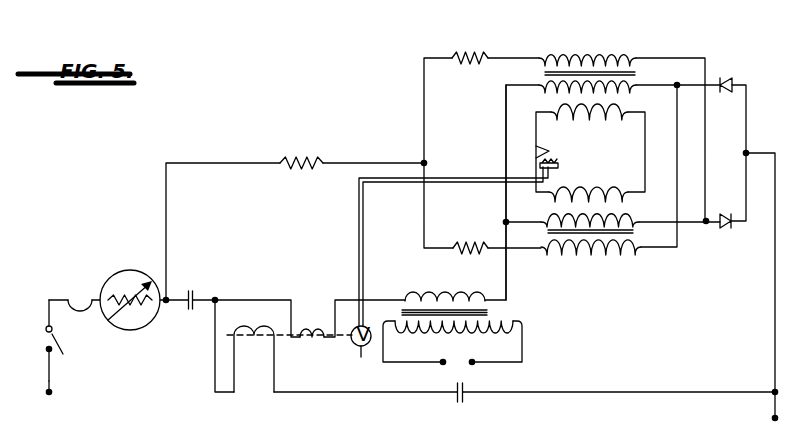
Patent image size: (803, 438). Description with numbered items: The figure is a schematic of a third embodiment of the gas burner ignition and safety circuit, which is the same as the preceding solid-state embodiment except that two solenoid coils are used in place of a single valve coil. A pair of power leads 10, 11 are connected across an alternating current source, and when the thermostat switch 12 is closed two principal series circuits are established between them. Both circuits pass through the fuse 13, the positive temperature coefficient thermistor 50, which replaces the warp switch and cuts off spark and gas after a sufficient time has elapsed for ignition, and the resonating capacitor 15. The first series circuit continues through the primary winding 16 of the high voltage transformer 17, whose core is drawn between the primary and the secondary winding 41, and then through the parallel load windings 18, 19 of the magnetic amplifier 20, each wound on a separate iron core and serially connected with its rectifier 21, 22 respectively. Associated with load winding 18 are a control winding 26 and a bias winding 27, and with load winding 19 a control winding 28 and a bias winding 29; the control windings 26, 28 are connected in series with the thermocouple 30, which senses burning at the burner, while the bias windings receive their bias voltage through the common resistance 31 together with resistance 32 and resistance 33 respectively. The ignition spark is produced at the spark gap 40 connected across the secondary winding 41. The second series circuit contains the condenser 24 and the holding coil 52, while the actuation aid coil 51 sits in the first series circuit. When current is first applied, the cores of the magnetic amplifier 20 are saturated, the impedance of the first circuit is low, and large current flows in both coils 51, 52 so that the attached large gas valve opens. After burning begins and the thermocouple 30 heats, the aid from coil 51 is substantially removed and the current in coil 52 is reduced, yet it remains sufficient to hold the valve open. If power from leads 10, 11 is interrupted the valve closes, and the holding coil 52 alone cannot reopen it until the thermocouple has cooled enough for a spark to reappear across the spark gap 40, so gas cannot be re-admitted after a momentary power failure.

The power lead 10 is at (51, 381).
The power lead 11 is at (775, 306).
The thermostat switch 12 is at (66, 346).
The fuse 13 is at (72, 299).
The resonating capacitor 15 is at (196, 291).
The primary winding 16 is at (440, 294).
The high voltage transformer 17 is at (504, 308).
The load winding 18 is at (632, 87).
The load winding 19 is at (636, 220).
The magnetic amplifier 20 is at (500, 148).
The rectifier 21 is at (724, 81).
The rectifier 22 is at (727, 228).
The condenser 24 is at (463, 396).
The control winding 26 is at (600, 108).
The bias winding 27 is at (585, 62).
The control winding 28 is at (604, 196).
The bias winding 29 is at (612, 254).
The thermocouple 30 is at (553, 152).
The resistance 31 is at (303, 161).
The resistance 32 is at (470, 53).
The resistance 33 is at (470, 247).
The spark gap 40 is at (458, 364).
The secondary winding 41 is at (522, 325).
The positive temperature coefficient thermistor 50 is at (127, 270).
The actuation aid coil 51 is at (304, 330).
The holding coil 52 is at (260, 340).